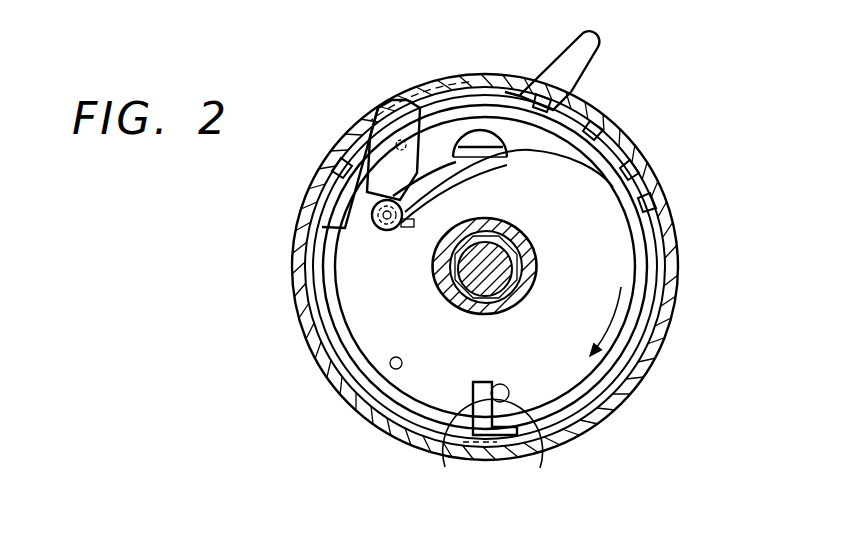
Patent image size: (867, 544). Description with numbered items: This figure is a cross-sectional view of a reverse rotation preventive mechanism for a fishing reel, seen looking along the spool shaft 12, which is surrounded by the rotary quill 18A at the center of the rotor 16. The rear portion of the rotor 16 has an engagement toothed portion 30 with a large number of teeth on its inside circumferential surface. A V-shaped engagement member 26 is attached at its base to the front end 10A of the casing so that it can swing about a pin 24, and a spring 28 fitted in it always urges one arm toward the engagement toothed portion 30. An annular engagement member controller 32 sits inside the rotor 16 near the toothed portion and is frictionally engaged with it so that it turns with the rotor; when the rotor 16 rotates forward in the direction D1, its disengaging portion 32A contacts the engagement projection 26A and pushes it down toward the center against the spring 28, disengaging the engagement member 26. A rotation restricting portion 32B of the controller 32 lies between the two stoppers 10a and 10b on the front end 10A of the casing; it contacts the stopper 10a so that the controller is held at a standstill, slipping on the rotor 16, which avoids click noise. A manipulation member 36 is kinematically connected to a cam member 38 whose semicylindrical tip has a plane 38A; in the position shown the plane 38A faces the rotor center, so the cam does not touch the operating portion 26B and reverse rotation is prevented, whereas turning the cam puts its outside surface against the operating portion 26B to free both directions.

The front end of the casing 10A is at (613, 277).
The stopper 10a is at (390, 358).
The stopper 10b is at (540, 464).
The spool shaft 12 is at (490, 253).
The rotor 16 is at (667, 318).
The rotary quill 18A is at (530, 270).
The pin 24 is at (336, 152).
The V-shaped engagement member 26 is at (382, 113).
The engagement projection 26A is at (404, 140).
The operating portion 26B is at (607, 182).
The spring 28 is at (373, 203).
The engagement toothed portion 30 is at (617, 135).
The engagement member controller 32 is at (318, 273).
The disengaging portion 32A is at (345, 202).
The rotation restricting portion 32B is at (444, 462).
The manipulation member 36 is at (600, 50).
The cam member 38 is at (527, 86).
The plane of the tip portion 38A is at (492, 112).
The direction of rotation D1 is at (640, 368).